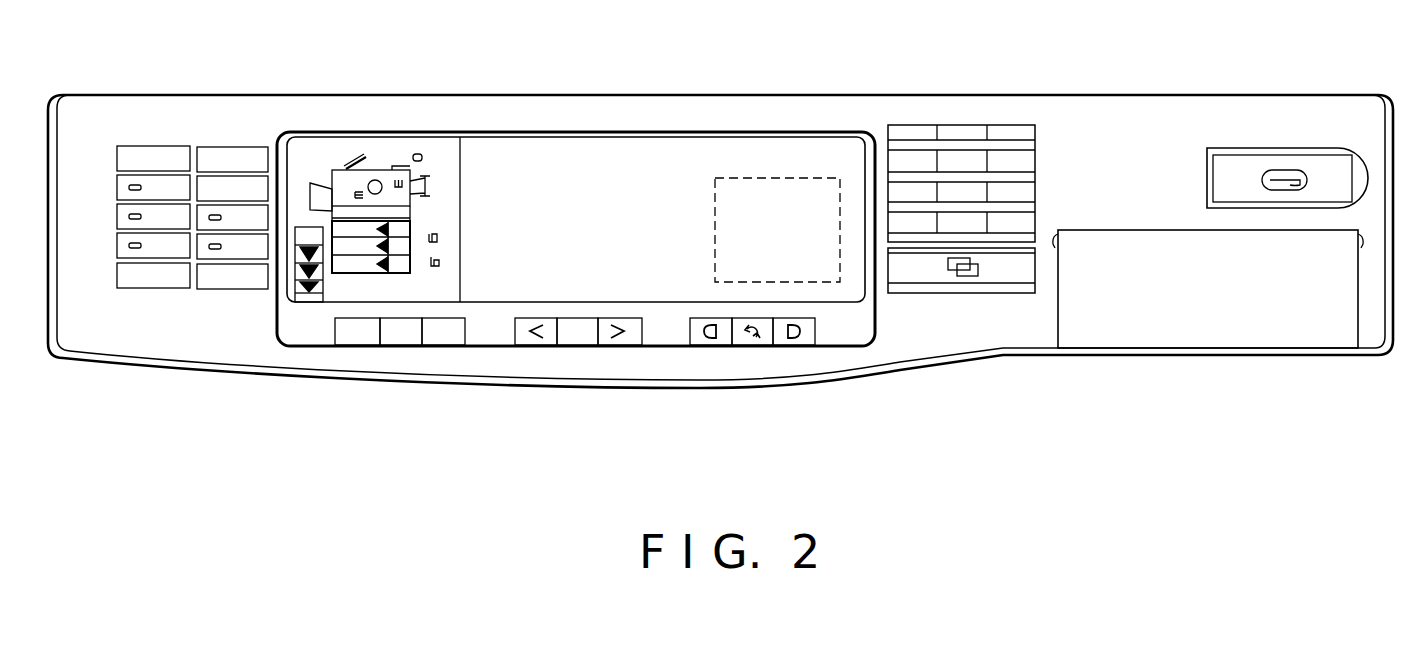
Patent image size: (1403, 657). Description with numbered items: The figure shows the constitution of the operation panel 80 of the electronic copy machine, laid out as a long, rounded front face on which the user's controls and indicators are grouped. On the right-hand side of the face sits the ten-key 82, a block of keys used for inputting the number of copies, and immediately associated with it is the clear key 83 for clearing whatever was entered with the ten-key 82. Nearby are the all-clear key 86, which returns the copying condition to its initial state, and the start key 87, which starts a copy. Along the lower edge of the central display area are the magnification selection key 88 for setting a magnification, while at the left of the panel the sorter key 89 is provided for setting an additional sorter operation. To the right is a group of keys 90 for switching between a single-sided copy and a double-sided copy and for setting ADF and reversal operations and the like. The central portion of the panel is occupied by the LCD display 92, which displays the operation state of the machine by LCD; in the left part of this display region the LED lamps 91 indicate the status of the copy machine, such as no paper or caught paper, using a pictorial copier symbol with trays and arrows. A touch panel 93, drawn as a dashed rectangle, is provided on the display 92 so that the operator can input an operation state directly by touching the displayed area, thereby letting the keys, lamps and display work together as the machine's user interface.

The operation panel 80 is at (1133, 84).
The ten-key 82 is at (993, 178).
The clear key 83 is at (1023, 225).
The all-clear key 86 is at (905, 222).
The start key 87 is at (1013, 272).
The magnification selection key 88 is at (575, 338).
The sorter key 89 is at (196, 291).
The keys 90 is at (1187, 332).
The LED lamps 91 is at (379, 165).
The LCD display 92 is at (553, 150).
The touch panel 93 is at (723, 207).